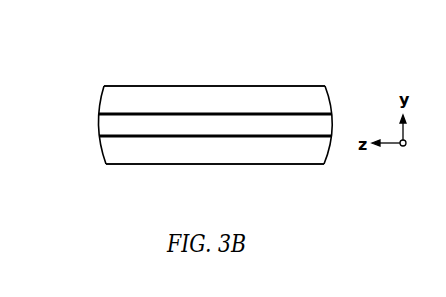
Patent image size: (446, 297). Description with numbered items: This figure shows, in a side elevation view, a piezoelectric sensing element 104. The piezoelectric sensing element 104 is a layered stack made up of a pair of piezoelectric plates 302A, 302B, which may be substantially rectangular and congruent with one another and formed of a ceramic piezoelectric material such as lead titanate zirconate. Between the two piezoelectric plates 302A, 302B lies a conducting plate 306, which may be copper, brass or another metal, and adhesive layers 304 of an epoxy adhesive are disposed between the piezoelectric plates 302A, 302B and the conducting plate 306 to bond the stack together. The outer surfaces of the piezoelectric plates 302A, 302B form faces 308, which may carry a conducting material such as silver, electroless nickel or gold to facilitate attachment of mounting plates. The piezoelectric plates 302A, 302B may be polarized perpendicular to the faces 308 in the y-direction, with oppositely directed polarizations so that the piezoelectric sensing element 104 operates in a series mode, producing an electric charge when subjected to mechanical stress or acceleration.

The piezoelectric sensing element 104 is at (108, 63).
The piezoelectric plate 302A is at (200, 100).
The piezoelectric plate 302B is at (253, 152).
The adhesive layers 304 is at (185, 113).
The conducting plate 306 is at (155, 125).
The face 308 is at (265, 86).